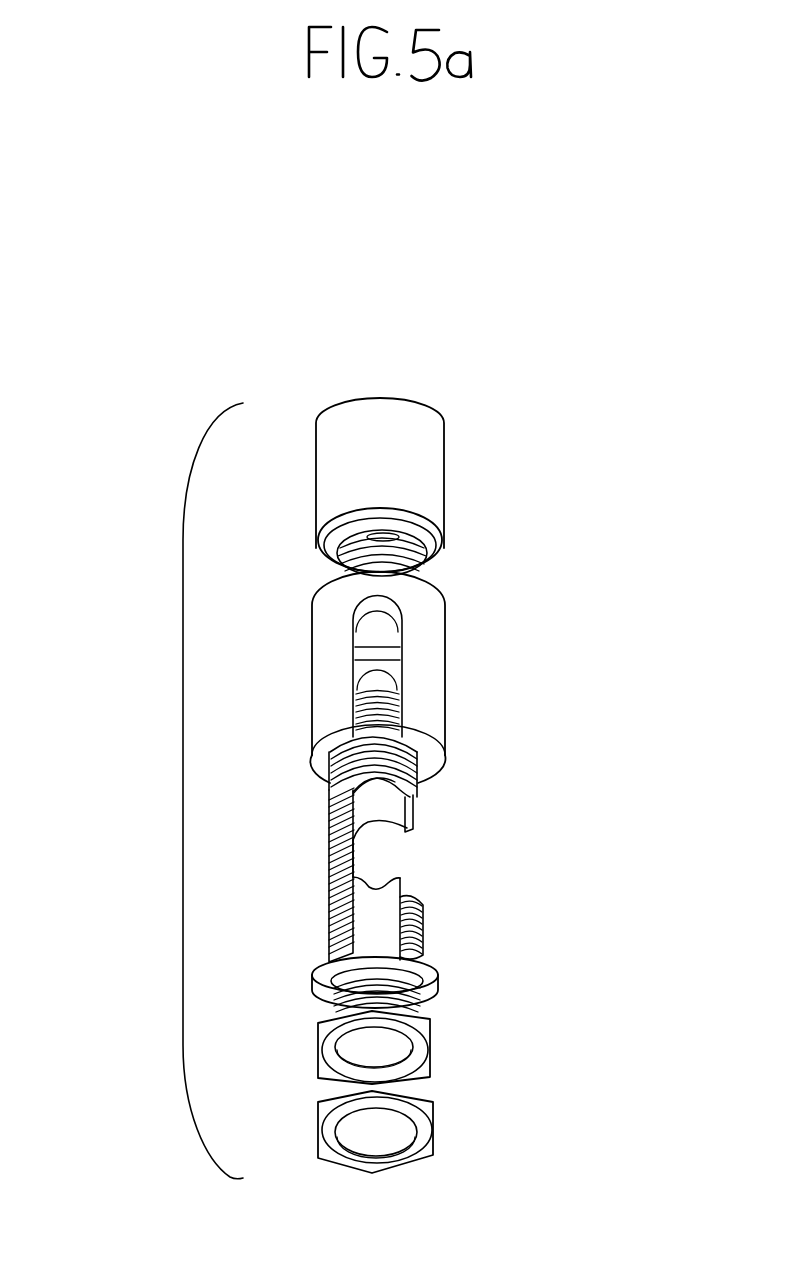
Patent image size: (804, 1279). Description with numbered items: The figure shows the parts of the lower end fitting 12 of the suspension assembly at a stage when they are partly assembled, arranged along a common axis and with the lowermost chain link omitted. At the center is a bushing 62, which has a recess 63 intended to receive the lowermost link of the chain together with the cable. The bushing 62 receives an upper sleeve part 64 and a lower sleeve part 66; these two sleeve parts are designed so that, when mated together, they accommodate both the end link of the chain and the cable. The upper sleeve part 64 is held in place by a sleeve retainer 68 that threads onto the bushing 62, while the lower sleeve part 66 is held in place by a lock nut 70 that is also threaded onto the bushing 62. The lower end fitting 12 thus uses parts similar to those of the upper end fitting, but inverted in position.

The lower end fitting 12 is at (183, 800).
The bushing 62 is at (417, 805).
The cutout / notch in threaded rod 63 is at (362, 855).
The upper sleeve part 64 is at (443, 635).
The lower sleeve part 66 is at (433, 973).
The sleeve retainer 68 is at (432, 443).
The lock nut 70 is at (432, 1054).